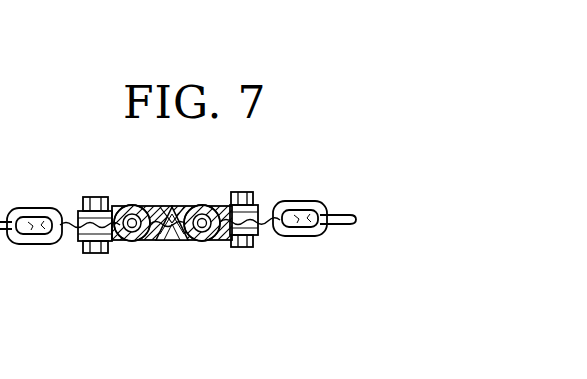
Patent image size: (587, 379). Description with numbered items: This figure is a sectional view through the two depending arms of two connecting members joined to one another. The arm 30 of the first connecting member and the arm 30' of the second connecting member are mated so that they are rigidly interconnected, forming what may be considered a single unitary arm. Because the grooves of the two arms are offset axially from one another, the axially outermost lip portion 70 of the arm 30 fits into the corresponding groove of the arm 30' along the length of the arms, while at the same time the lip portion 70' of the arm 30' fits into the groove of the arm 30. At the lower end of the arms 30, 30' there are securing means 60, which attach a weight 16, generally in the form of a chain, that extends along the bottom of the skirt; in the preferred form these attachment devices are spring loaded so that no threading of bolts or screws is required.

The weight 16 is at (19, 247).
The securing means 60 is at (97, 252).
The arm 30 is at (217, 253).
The arm 30' is at (146, 197).
The lip portion 70 is at (184, 255).
The lip portion 70' is at (161, 255).